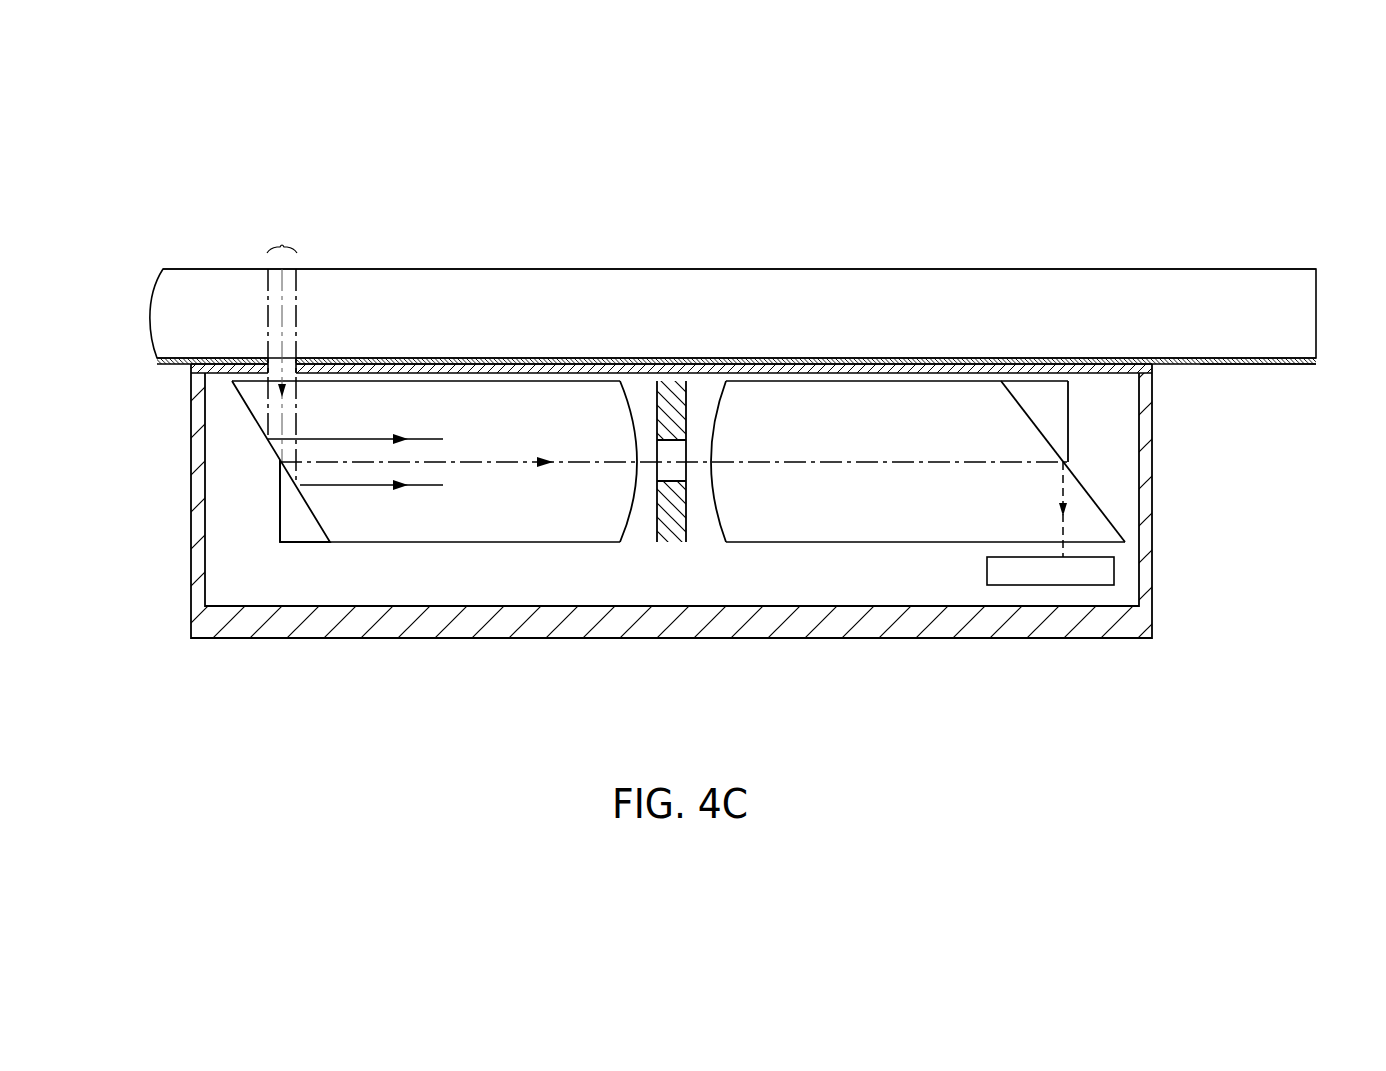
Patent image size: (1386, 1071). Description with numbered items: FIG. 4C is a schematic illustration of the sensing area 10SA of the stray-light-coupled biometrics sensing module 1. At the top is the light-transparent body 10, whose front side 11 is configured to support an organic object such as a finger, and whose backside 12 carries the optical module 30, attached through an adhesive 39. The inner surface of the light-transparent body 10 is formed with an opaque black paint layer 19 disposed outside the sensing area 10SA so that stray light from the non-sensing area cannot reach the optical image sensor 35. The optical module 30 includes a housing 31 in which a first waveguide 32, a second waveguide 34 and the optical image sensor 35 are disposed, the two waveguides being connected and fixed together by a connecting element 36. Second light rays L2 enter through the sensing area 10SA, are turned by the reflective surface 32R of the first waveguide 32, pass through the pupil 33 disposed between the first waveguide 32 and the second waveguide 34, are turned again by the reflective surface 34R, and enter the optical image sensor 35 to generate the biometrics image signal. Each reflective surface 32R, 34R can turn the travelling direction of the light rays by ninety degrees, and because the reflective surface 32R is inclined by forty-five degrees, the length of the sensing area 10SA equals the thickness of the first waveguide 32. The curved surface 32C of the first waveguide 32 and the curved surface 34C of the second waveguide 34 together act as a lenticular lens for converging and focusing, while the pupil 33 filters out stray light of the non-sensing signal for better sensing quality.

The stray-light-coupled biometrics sensing module 1 is at (725, 388).
The light-transparent body 10 is at (767, 330).
The front side 11 is at (937, 268).
The backside 12 is at (1278, 365).
The opaque black paint layer 19 is at (493, 358).
The sensing area 10SA is at (287, 349).
The second light rays L2 is at (283, 327).
The optical module 30 is at (676, 555).
The housing 31 is at (1140, 620).
The first waveguide 32 is at (434, 547).
The curved surface of the first waveguide 32C is at (630, 422).
The reflective surface of the first waveguide 32R is at (253, 417).
The pupil 33 is at (672, 390).
The second waveguide 34 is at (918, 549).
The curved surface of the second waveguide 34C is at (717, 420).
The reflective surface of the second waveguide 34R is at (1095, 497).
The optical image sensor 35 is at (1048, 578).
The connecting element 36 is at (288, 527).
The adhesive 39 is at (190, 367).